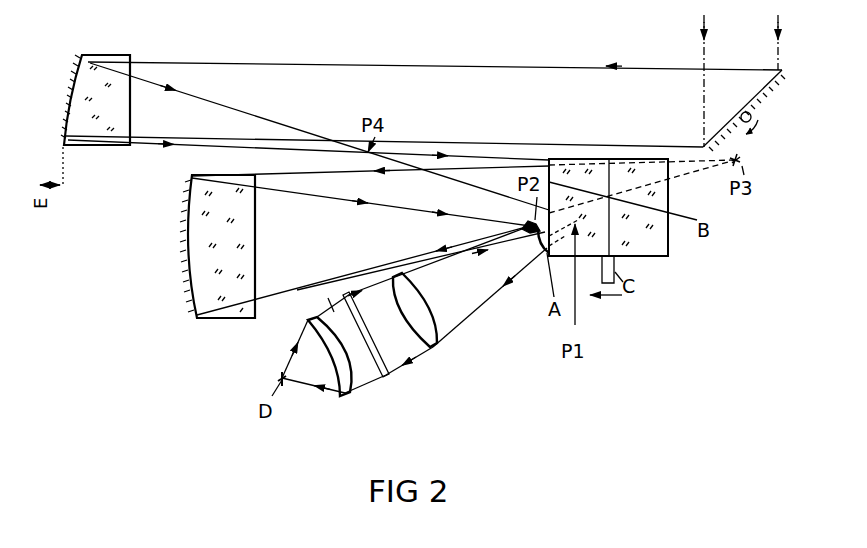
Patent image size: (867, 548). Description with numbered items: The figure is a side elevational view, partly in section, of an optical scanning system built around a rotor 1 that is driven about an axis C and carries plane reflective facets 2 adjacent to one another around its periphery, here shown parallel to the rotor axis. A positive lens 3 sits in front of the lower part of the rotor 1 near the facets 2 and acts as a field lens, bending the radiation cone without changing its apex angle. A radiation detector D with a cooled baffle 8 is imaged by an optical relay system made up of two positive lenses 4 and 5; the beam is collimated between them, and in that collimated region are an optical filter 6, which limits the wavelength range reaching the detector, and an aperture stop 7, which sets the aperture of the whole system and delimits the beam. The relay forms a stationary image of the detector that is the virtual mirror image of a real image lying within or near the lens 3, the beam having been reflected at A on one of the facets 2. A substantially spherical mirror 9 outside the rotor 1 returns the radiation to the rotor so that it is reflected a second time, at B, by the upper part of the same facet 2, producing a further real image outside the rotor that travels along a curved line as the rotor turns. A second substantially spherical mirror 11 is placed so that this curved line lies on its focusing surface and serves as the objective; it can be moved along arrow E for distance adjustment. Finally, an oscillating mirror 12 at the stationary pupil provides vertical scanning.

The rotor 1 is at (640, 258).
The reflective facets 2 is at (548, 252).
The positive lens 3 is at (527, 237).
The positive lens 4 is at (437, 346).
The positive lens 5 is at (345, 400).
The optical filter 6 is at (387, 378).
The aperture stop 7 is at (371, 380).
The cooled baffle 8 is at (291, 388).
The substantially spherical mirror 9 is at (188, 266).
The substantially spherical mirror 11 is at (70, 148).
The oscillating mirror 12 is at (716, 136).